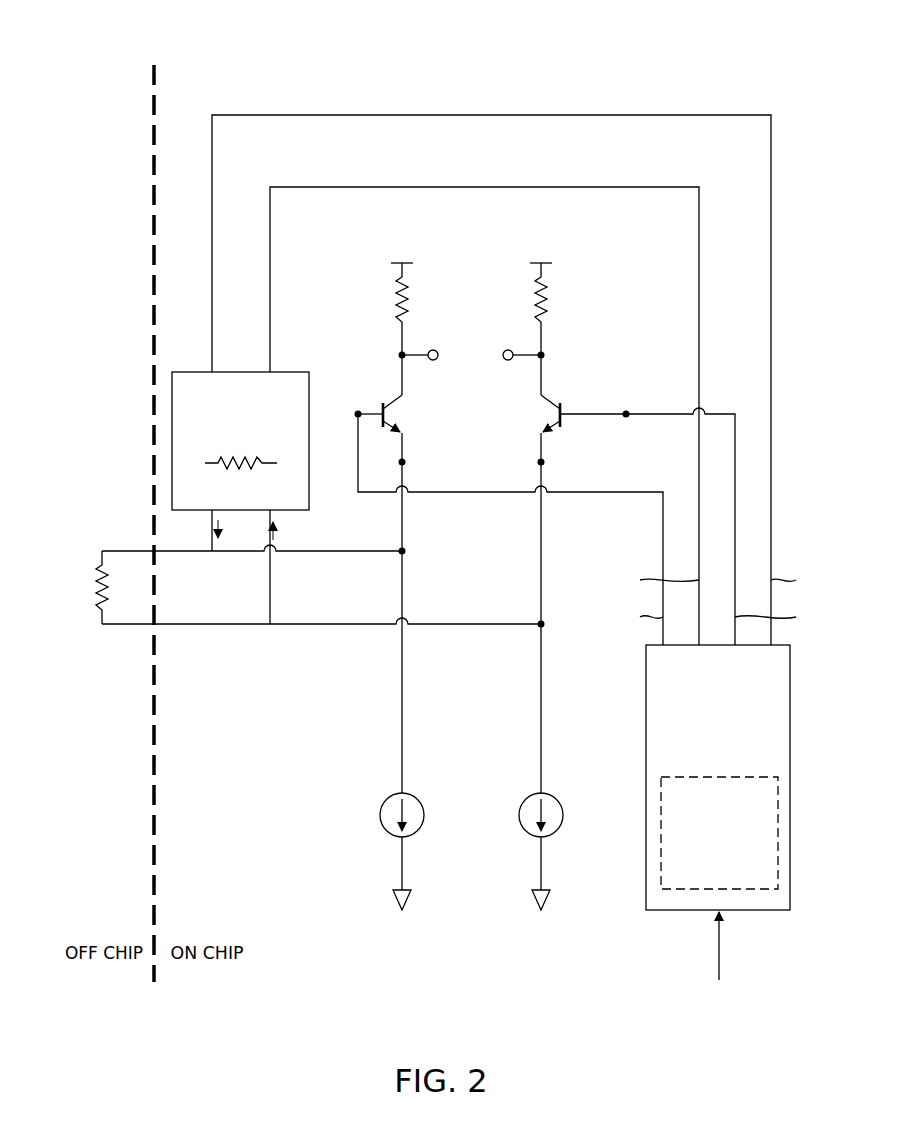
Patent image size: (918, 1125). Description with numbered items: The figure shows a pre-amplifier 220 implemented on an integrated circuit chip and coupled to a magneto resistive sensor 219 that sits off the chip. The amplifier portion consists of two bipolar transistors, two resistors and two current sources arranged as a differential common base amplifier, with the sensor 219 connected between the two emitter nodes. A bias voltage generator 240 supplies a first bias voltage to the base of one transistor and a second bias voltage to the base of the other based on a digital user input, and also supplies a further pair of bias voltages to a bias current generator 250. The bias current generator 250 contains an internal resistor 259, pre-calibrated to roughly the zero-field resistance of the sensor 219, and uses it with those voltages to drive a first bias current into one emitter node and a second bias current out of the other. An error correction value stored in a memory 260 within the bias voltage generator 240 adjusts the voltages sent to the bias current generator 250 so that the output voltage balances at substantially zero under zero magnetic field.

The pre-amplifier 220 is at (562, 64).
The magneto resistive sensor 219 is at (102, 557).
The bias current generator 250 is at (260, 441).
The internal resistor 259 is at (265, 463).
The bias voltage generator 240 is at (718, 812).
The memory storing error correction value 260 is at (719, 833).